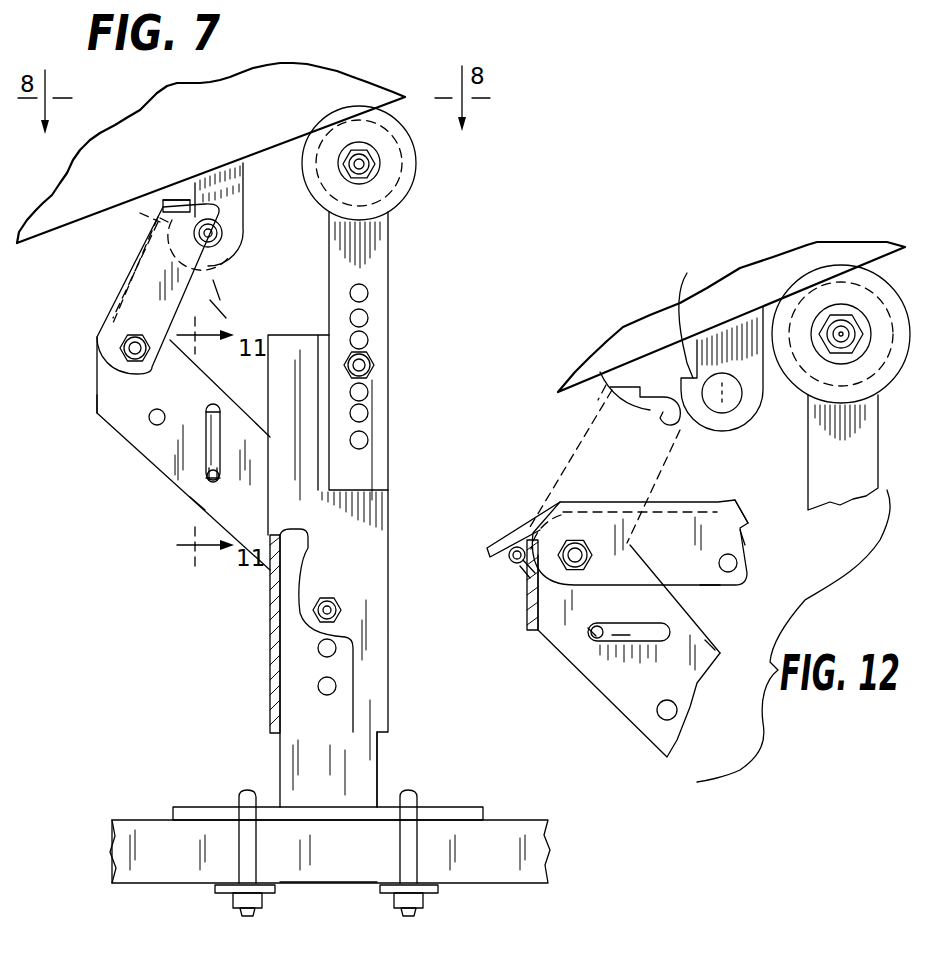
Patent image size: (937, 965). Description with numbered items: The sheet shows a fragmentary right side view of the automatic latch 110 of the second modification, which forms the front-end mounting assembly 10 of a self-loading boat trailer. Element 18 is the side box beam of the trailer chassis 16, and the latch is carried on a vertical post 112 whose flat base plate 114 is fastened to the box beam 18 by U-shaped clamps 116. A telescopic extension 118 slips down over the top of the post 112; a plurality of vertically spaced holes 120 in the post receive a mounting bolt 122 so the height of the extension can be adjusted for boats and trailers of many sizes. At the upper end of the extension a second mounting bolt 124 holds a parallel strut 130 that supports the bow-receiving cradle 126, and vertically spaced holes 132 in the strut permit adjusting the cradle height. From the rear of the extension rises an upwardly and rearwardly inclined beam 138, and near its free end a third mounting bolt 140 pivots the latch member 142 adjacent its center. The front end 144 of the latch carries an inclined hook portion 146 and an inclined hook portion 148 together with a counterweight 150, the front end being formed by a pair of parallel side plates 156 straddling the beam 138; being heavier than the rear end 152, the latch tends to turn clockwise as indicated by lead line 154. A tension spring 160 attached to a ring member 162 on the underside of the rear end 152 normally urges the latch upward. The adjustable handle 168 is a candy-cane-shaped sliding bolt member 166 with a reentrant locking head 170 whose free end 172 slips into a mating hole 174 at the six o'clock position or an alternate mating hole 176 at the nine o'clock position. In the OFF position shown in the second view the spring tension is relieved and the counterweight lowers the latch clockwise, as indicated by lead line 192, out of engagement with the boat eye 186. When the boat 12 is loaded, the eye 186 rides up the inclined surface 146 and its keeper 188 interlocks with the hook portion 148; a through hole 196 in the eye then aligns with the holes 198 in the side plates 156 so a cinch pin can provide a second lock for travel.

In FIG. 7, the mounting assembly 10 is at (348, 884).
In FIG. 7, the boat 12 is at (330, 70).
In FIG. 12, the boat 12 is at (778, 260).
In FIG. 7, the self-loading trailer chassis 16 is at (505, 882).
In FIG. 7, the box beam 18 is at (152, 882).
In FIG. 7, the automatic latch 110 is at (98, 300).
In FIG. 12, the automatic latch 110 is at (738, 662).
In FIG. 7, the vertical post 112 is at (286, 760).
In FIG. 7, the flat base plate 114 is at (185, 807).
In FIG. 7, the U-shaped clamps 116 is at (237, 870).
In FIG. 7, the telescopic extension 118 is at (386, 513).
In FIG. 7, the vertically spaced holes 120 is at (318, 686).
In FIG. 7, the mounting bolt 122 is at (332, 596).
In FIG. 7, the second mounting bolt 124 is at (372, 364).
In FIG. 7, the bow-receiving cradle 126 is at (416, 178).
In FIG. 12, the bow-receiving cradle 126 is at (829, 273).
In FIG. 7, the parallel strut 130 is at (392, 256).
In FIG. 12, the parallel strut 130 is at (852, 484).
In FIG. 7, the vertically spaced holes 132 is at (368, 438).
In FIG. 7, the inclined beam 138 is at (205, 480).
In FIG. 12, the inclined beam 138 is at (713, 652).
In FIG. 7, the third mounting bolt 140 is at (120, 350).
In FIG. 12, the third mounting bolt 140 is at (575, 570).
In FIG. 7, the pivoted latch member 142 is at (160, 245).
In FIG. 12, the pivoted latch member 142 is at (600, 418).
In FIG. 7, the front end 144 is at (165, 232).
In FIG. 12, the front end 144 is at (747, 540).
In FIG. 7, the inclined hook portion 146 is at (135, 283).
In FIG. 12, the inclined hook portion 146 is at (660, 502).
In FIG. 7, the inclined hook portion 148 is at (185, 200).
In FIG. 12, the inclined hook portion 148 is at (738, 512).
In FIG. 7, the counterweight 150 is at (220, 268).
In FIG. 7, the rear end 152 is at (97, 400).
In FIG. 12, the rear end 152 is at (490, 553).
In FIG. 7, the lead line 154 is at (208, 296).
In FIG. 7, the parallel side plates 156 is at (225, 324).
In FIG. 12, the parallel side plates 156 is at (690, 578).
In FIG. 12, the tension spring 160 is at (520, 575).
In FIG. 12, the ring member 162 is at (508, 558).
In FIG. 12, the sliding bolt member 166 is at (663, 640).
In FIG. 7, the adjustable handle 168 is at (222, 414).
In FIG. 12, the adjustable handle 168 is at (620, 642).
In FIG. 7, the locking head 170 is at (208, 470).
In FIG. 7, the free end 172 is at (206, 480).
In FIG. 7, the mating hole 174 is at (205, 512).
In FIG. 12, the mating hole 174 is at (666, 716).
In FIG. 7, the alternate mating hole 176 is at (152, 420).
In FIG. 12, the alternate mating hole 176 is at (594, 642).
In FIG. 7, the boat eye 186 is at (243, 220).
In FIG. 12, the boat eye 186 is at (764, 392).
In FIG. 7, the keeper 188 is at (240, 196).
In FIG. 12, the keeper 188 is at (687, 283).
In FIG. 12, the lead line 192 is at (536, 467).
In FIG. 7, the through hole 196 is at (220, 228).
In FIG. 12, the through hole 196 is at (728, 410).
In FIG. 7, the aligned holes 198 is at (150, 215).
In FIG. 12, the aligned holes 198 is at (611, 388).